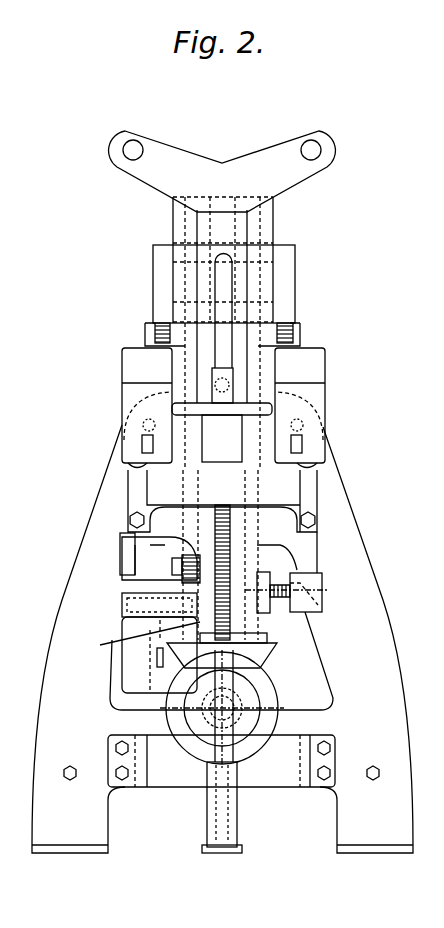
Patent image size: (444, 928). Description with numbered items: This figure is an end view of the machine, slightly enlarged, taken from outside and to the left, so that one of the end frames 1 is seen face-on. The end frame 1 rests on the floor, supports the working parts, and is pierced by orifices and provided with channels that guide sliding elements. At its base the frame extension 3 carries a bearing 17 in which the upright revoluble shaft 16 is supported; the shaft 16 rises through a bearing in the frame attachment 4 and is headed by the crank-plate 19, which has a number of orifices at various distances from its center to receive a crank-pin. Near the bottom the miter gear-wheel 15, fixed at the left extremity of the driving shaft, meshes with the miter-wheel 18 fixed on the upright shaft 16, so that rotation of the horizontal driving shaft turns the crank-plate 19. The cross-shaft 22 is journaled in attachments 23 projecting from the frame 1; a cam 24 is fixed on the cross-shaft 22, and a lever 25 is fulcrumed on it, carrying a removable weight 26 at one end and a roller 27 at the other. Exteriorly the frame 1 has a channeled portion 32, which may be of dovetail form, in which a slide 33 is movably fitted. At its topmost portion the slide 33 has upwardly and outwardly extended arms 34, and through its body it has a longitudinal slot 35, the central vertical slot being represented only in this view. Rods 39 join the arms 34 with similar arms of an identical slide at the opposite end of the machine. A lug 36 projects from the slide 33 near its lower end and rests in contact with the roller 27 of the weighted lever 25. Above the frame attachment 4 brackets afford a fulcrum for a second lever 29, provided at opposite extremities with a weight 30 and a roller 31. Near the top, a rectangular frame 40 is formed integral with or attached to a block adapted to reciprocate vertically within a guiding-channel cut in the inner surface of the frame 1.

The end frame 1 is at (222, 639).
The frame extension 3 is at (221, 761).
The frame attachment 4 is at (222, 501).
The miter gear-wheel 15 is at (270, 697).
The upright revoluble shaft 16 is at (137, 563).
The bearing 17 is at (222, 751).
The miter-wheel 18 is at (268, 660).
The crank-plate 19 is at (222, 415).
The cross-shaft 22 is at (277, 575).
The attachment 23 is at (122, 566).
The cam 24 is at (250, 637).
The lever 25 is at (148, 583).
The weight 26 is at (159, 655).
The roller 27 is at (175, 563).
The lever 29 is at (145, 334).
The weight 30 is at (223, 408).
The roller 31 is at (158, 325).
The channeled portion 32 is at (195, 224).
The slide 33 is at (240, 238).
The arm 34 is at (222, 171).
The longitudinal slot 35 is at (222, 287).
The lug 36 is at (195, 560).
The rod 39 is at (133, 150).
The rectangular frame 40 is at (160, 271).